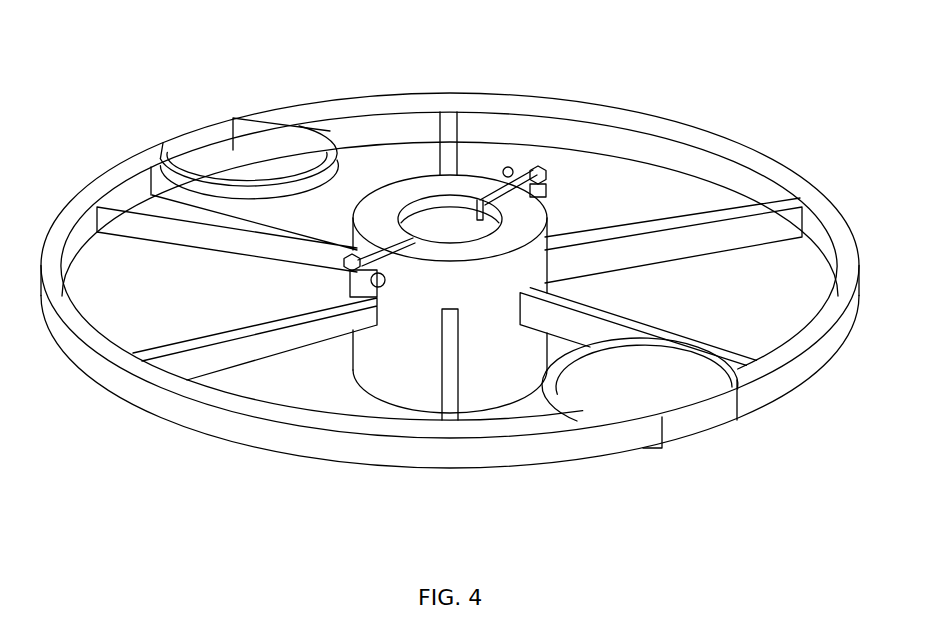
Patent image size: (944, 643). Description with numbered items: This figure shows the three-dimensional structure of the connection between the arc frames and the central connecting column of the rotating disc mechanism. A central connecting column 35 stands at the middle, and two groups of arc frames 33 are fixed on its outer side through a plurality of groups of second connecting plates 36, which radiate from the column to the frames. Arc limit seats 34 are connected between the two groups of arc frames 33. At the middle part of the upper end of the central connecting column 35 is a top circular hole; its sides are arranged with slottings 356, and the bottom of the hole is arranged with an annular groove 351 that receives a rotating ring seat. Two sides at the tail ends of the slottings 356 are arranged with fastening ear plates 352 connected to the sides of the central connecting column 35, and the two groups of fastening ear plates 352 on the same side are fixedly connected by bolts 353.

The arc frame 33 is at (297, 443).
The arc limit seat 34 is at (647, 370).
The central connecting column 35 is at (482, 370).
The second connecting plate 36 is at (655, 238).
The annular groove 351 is at (450, 230).
The fastening ear plate 352 is at (348, 262).
The bolt 353 is at (513, 173).
The slotting 356 is at (352, 272).